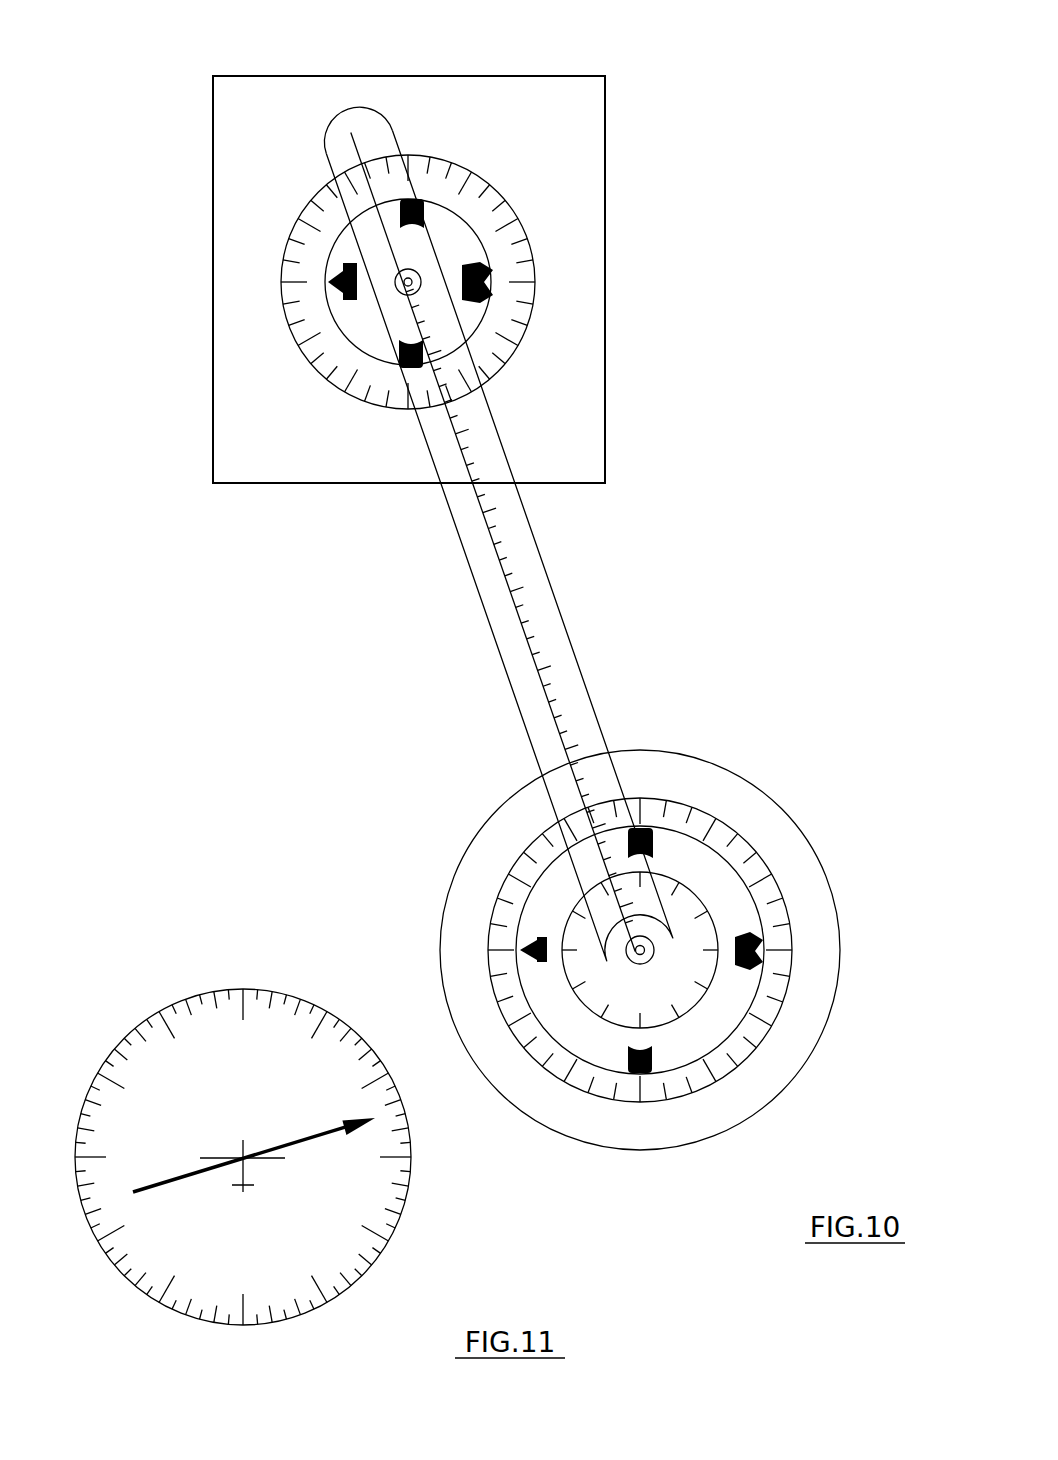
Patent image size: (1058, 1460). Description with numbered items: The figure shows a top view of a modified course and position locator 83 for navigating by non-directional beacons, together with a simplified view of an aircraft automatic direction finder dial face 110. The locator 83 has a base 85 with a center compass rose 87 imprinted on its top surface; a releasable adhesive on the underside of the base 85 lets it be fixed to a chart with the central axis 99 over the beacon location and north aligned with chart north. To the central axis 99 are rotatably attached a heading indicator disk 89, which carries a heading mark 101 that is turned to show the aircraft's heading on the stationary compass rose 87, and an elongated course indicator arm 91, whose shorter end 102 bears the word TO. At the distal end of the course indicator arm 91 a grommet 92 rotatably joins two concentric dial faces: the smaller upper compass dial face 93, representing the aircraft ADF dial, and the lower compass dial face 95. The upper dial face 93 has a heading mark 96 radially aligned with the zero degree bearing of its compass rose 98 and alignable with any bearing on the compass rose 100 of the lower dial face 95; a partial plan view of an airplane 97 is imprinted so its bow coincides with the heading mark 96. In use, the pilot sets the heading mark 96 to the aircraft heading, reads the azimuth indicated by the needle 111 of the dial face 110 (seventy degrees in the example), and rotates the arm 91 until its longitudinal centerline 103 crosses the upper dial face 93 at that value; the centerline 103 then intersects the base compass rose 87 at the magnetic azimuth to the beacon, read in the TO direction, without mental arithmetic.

In FIG. 10, the course and position locator 83 is at (632, 153).
In FIG. 10, the base 85 is at (620, 423).
In FIG. 10, the center compass rose 87 is at (535, 318).
In FIG. 10, the heading indicator disk 89 is at (350, 328).
In FIG. 10, the course indicator arm 91 is at (556, 551).
In FIG. 10, the grommet 92 is at (645, 954).
In FIG. 10, the upper compass dial face 93 is at (667, 1058).
In FIG. 10, the lower compass dial face 95 is at (802, 1005).
In FIG. 10, the heading mark 96 is at (521, 943).
In FIG. 10, the airplane 97 is at (745, 927).
In FIG. 10, the compass rose 98 is at (573, 1007).
In FIG. 10, the central axis 99 is at (415, 278).
In FIG. 10, the compass rose 100 is at (600, 1094).
In FIG. 10, the heading mark 101 is at (330, 282).
In FIG. 10, the shorter end 102 is at (376, 128).
In FIG. 10, the longitudinal centerline 103 is at (543, 665).
In FIG. 11, the dial face 110 is at (291, 968).
In FIG. 11, the needle 111 is at (312, 1140).